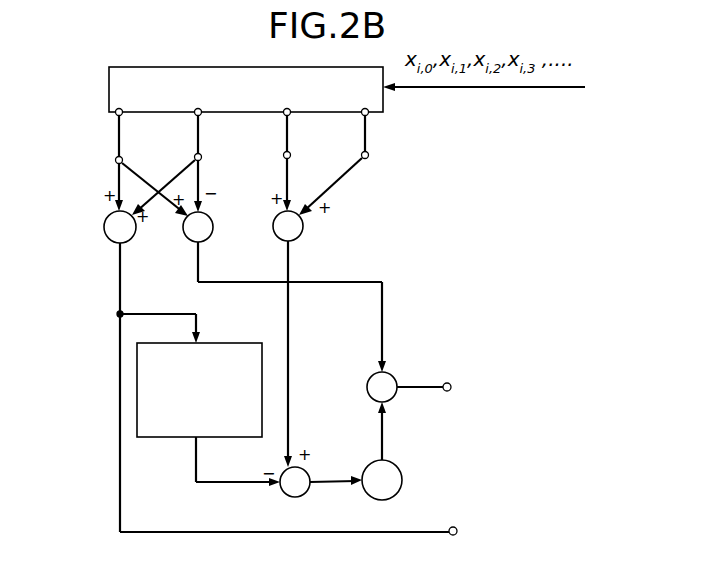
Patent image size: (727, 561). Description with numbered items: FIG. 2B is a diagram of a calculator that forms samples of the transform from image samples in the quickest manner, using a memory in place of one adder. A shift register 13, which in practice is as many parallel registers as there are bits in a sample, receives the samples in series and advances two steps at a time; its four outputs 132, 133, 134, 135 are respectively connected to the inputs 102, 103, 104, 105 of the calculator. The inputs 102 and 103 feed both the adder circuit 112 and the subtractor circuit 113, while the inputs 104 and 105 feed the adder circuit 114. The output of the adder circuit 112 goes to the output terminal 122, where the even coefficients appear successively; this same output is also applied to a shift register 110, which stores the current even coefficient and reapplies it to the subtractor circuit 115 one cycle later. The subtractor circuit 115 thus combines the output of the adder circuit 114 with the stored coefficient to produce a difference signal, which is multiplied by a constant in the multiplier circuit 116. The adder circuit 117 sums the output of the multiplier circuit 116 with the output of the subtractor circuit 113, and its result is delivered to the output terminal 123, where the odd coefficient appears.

The shift register 13 is at (108, 83).
The shift register output 132 is at (116, 114).
The shift register output 133 is at (195, 114).
The shift register output 134 is at (284, 114).
The shift register output 135 is at (368, 115).
The input terminal 102 is at (116, 159).
The input terminal 103 is at (195, 156).
The input terminal 104 is at (283, 155).
The input terminal 105 is at (362, 155).
The adder circuit 112 is at (104, 227).
The subtractor circuit 113 is at (213, 222).
The adder circuit 114 is at (300, 234).
The shift register 110 is at (224, 342).
The subtractor circuit 115 is at (284, 493).
The multiplier by alpha circuit 116 is at (397, 466).
The adder circuit 117 is at (393, 376).
The output terminal 122 is at (457, 531).
The output terminal 123 is at (451, 387).